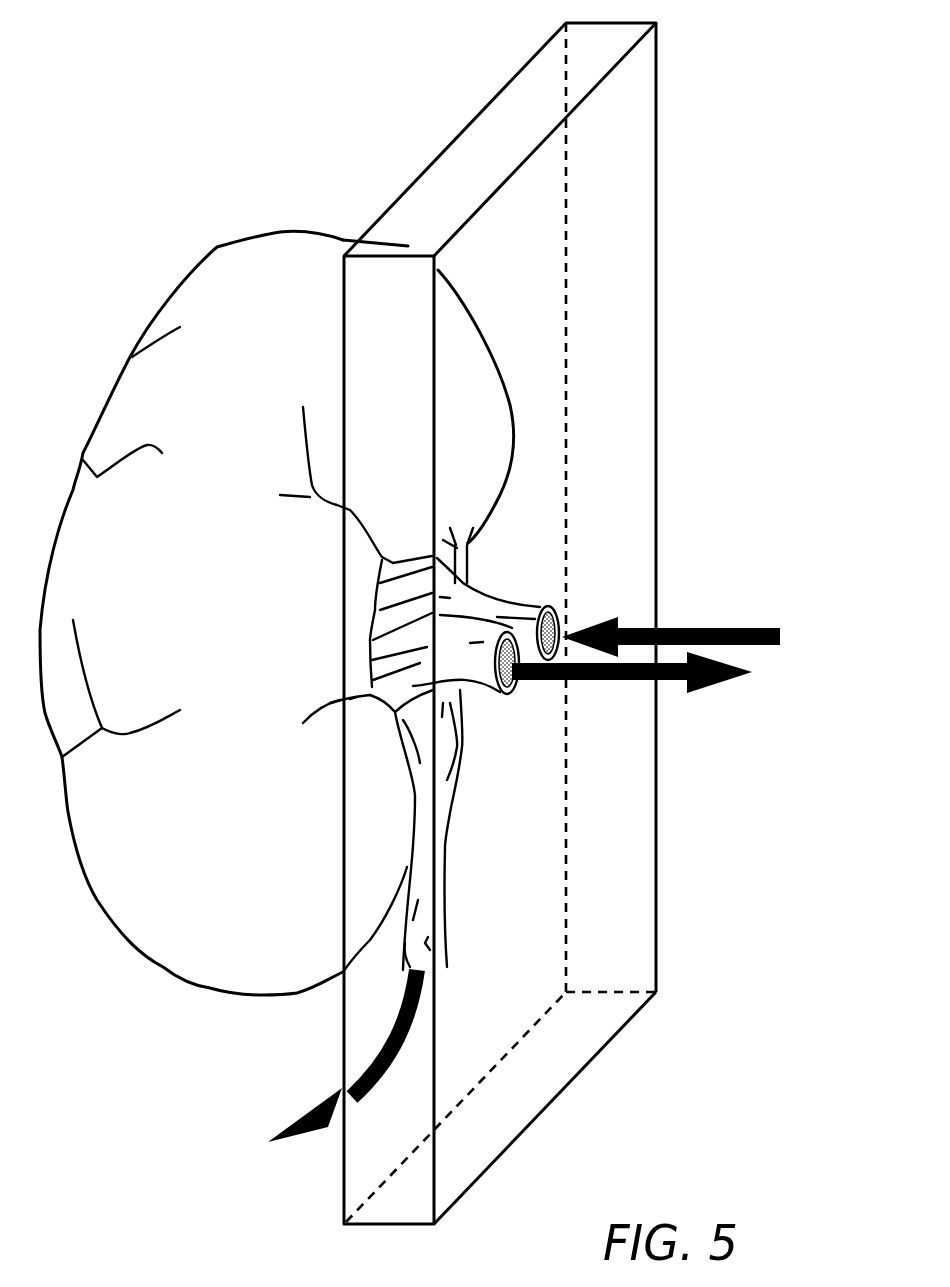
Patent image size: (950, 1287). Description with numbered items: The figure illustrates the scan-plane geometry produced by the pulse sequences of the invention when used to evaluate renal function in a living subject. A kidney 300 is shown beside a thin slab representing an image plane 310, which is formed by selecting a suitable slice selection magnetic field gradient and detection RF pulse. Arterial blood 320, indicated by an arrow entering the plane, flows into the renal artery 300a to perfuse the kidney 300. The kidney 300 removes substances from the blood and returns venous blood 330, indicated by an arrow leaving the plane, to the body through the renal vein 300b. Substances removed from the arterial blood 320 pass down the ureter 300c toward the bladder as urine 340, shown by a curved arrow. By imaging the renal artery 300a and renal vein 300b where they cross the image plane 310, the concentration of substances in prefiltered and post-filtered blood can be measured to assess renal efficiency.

The kidney 300 is at (217, 247).
The renal artery 300a is at (540, 607).
The renal vein 300b is at (500, 692).
The ureter 300c is at (445, 793).
The image plane 310 is at (658, 360).
The arterial blood 320 is at (742, 628).
The venous blood 330 is at (670, 680).
The urine 340 is at (318, 1097).